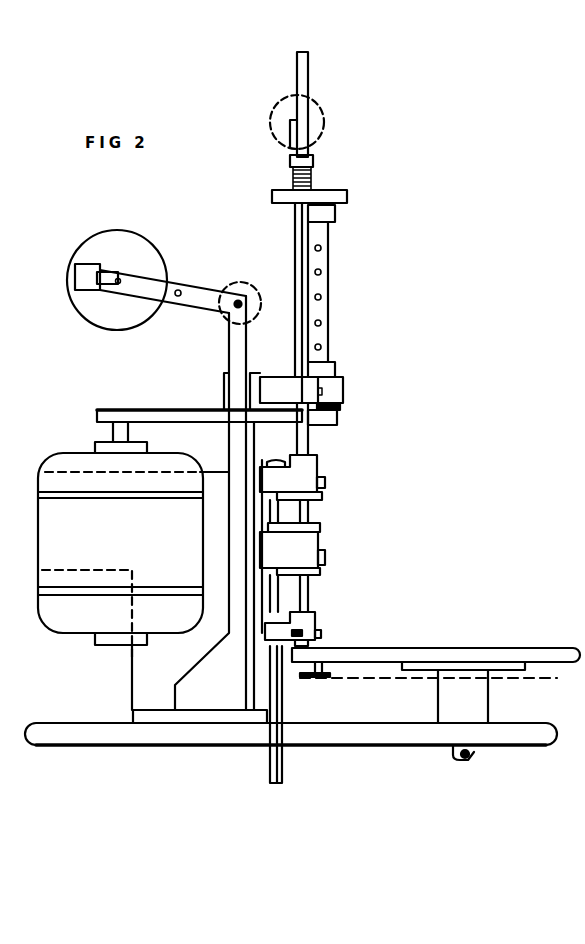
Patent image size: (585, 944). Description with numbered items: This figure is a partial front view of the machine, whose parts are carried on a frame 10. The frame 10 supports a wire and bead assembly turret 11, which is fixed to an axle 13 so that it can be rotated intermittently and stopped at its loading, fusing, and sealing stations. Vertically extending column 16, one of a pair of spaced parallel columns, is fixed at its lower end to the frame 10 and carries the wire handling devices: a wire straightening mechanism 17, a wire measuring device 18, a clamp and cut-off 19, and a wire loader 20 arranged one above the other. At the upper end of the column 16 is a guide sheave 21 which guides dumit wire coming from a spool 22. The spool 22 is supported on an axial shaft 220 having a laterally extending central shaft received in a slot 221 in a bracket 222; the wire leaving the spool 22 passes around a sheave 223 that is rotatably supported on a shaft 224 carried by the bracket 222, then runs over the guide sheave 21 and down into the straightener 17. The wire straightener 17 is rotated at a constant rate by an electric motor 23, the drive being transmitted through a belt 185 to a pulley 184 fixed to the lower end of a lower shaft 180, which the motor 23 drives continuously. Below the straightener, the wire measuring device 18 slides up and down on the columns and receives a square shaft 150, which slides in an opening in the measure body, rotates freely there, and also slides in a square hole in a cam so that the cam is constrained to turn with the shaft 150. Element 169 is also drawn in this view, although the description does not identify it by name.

The frame 10 is at (379, 727).
The wire and bead assembly turret 11 is at (543, 650).
The axle 13 is at (472, 756).
The column 16 is at (305, 68).
The wire straightening mechanism 17 is at (330, 257).
The wire measuring device 18 is at (320, 467).
The clamp and cut-off 19 is at (312, 552).
The wire loader 20 is at (305, 627).
The guide sheave 21 is at (320, 112).
The spool 22 is at (152, 243).
The electric motor 23 is at (55, 455).
The square shaft 150 is at (282, 782).
The rods 169 is at (278, 607).
The lower shaft 180 is at (330, 404).
The pulley 184 is at (338, 425).
The belt 185 is at (192, 412).
The axial shaft 220 is at (118, 284).
The slot 221 is at (80, 280).
The bracket 222 is at (237, 338).
The sheave 223 is at (227, 285).
The shaft 224 is at (234, 307).